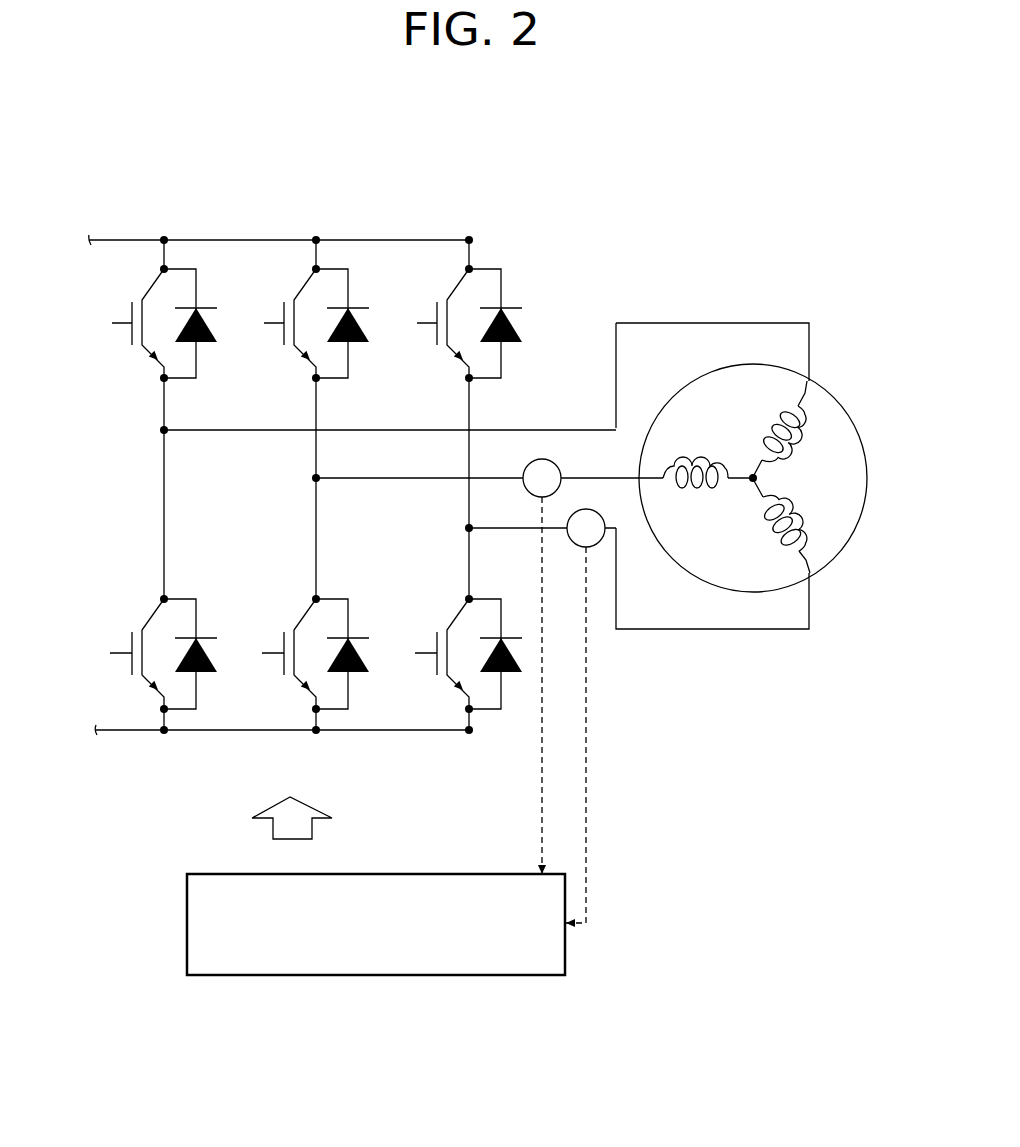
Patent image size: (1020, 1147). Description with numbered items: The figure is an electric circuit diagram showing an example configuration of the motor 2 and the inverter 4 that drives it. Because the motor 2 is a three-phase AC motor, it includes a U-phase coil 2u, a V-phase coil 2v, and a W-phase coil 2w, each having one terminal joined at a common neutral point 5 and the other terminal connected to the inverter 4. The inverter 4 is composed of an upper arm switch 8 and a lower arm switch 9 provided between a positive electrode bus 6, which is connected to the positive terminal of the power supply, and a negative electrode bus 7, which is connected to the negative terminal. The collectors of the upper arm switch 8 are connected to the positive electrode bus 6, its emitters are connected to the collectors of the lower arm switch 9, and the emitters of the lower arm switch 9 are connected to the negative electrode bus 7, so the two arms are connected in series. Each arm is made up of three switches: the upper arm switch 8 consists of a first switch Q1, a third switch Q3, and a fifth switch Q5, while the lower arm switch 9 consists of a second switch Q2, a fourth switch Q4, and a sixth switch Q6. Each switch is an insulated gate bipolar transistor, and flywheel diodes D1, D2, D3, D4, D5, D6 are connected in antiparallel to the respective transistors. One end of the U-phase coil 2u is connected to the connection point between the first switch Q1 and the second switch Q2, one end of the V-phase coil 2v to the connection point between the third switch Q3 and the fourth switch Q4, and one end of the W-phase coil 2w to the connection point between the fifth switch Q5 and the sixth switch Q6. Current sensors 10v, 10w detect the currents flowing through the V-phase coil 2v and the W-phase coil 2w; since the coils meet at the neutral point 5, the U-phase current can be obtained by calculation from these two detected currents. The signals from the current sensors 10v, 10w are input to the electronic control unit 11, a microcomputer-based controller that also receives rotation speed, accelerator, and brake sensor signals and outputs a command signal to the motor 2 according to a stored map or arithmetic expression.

The motor 2 is at (867, 478).
The U-phase coil 2u is at (795, 428).
The V-phase coil 2v is at (692, 466).
The W-phase coil 2w is at (799, 521).
The inverter 4 is at (505, 219).
The neutral point 5 is at (758, 478).
The positive electrode bus 6 is at (128, 240).
The negative electrode bus 7 is at (110, 731).
The upper arm switch 8 is at (548, 279).
The lower arm switch 9 is at (73, 650).
The current sensor 10v is at (555, 465).
The current sensor 10w is at (604, 508).
The electronic control unit 11 is at (187, 925).
The first switch Q1 is at (130, 356).
The second switch Q2 is at (140, 613).
The third switch Q3 is at (296, 356).
The fourth switch Q4 is at (292, 613).
The fifth switch Q5 is at (449, 356).
The sixth switch Q6 is at (447, 613).
The flywheel diode D1 is at (207, 342).
The flywheel diode D2 is at (208, 672).
The flywheel diode D3 is at (359, 342).
The flywheel diode D4 is at (360, 672).
The flywheel diode D5 is at (512, 342).
The flywheel diode D6 is at (511, 670).